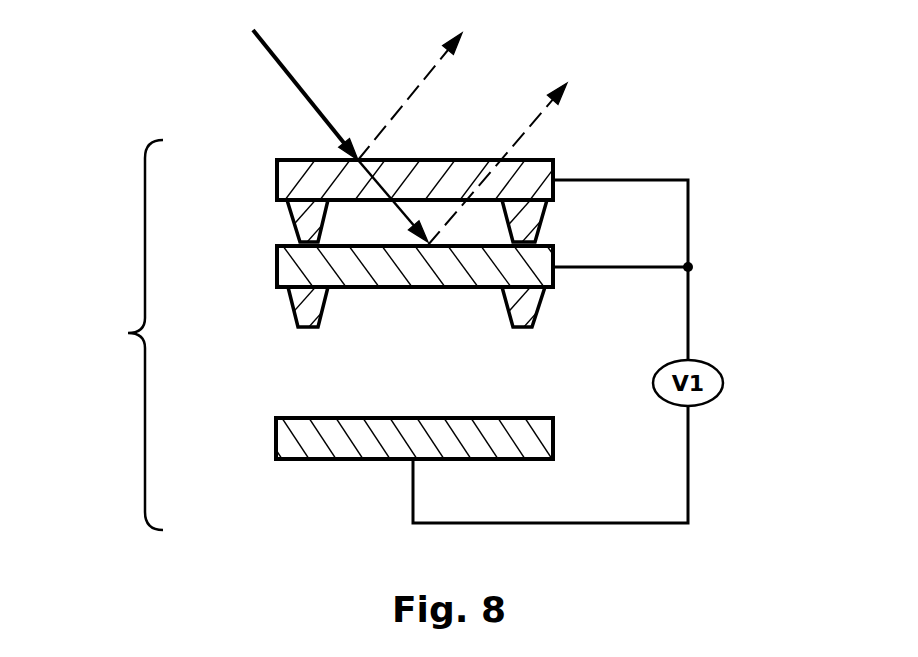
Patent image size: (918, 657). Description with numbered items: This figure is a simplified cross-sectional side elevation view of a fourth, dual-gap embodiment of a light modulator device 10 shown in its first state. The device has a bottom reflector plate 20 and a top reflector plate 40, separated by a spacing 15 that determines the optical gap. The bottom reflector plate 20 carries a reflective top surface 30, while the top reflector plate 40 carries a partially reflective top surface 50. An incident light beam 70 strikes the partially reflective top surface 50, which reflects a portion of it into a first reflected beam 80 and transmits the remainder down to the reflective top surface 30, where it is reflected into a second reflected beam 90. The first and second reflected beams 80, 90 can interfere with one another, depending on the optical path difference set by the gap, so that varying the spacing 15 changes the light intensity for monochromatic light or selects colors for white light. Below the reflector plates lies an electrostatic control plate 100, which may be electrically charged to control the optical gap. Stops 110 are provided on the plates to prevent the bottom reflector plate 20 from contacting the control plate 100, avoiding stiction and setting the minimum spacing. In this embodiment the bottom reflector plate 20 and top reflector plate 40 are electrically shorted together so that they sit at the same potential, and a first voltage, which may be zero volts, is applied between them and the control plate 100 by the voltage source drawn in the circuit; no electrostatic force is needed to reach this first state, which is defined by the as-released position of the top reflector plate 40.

The light modulator device 10 is at (128, 334).
The spacing 15 is at (352, 235).
The bottom reflector plate 20 is at (278, 267).
The reflective top surface 30 is at (540, 247).
The top reflector plate 40 is at (278, 171).
The partially reflective top surface 50 is at (300, 158).
The incident light beam 70 is at (272, 60).
The first reflected beam 80 is at (424, 82).
The second reflected beam 90 is at (532, 122).
The electrostatic control plate 100 is at (324, 418).
The stops 110 is at (290, 218).